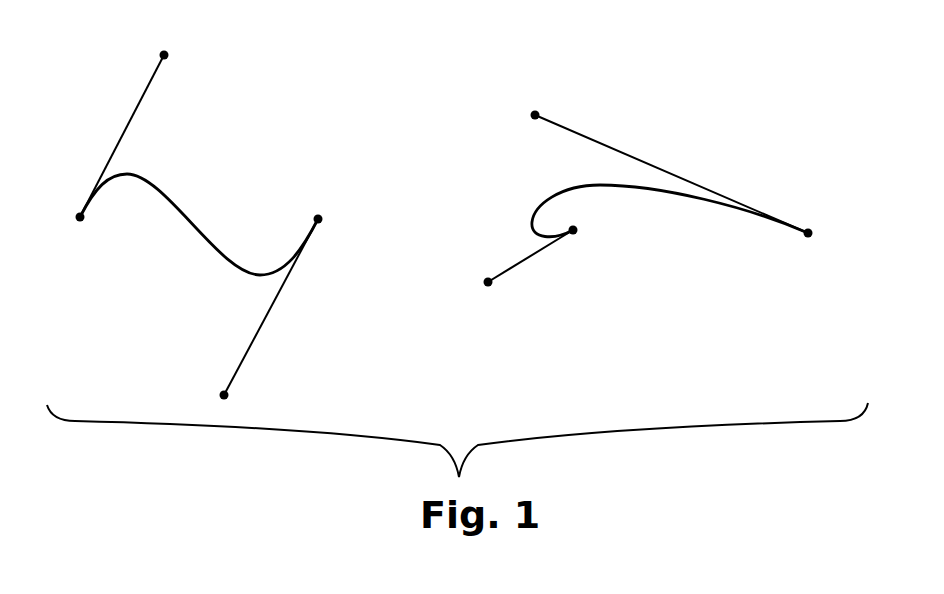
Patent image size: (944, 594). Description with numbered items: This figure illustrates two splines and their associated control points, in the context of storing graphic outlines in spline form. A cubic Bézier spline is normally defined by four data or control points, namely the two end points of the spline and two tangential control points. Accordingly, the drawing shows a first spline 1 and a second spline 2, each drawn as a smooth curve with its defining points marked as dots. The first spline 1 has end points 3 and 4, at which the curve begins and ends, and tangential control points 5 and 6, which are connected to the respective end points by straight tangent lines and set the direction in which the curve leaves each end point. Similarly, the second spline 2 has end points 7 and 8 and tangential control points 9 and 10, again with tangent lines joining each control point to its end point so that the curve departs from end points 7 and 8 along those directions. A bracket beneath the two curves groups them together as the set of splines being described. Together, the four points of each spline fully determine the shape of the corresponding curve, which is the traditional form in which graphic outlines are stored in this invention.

The first spline 1 is at (193, 224).
The second spline 2 is at (544, 197).
The end point 3 is at (77, 217).
The end point 4 is at (323, 216).
The tangential control point 5 is at (159, 54).
The tangential control point 6 is at (220, 395).
The end point 7 is at (578, 231).
The end point 8 is at (812, 234).
The tangential control point 9 is at (532, 114).
The tangential control point 10 is at (484, 282).